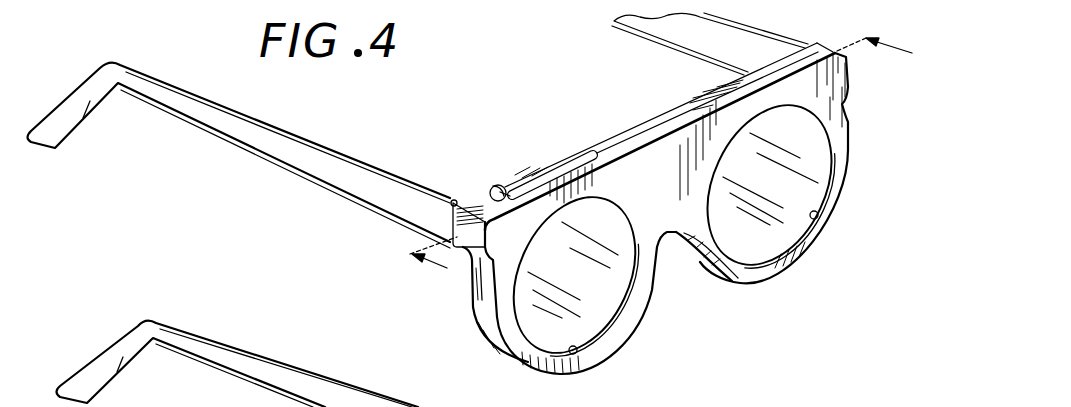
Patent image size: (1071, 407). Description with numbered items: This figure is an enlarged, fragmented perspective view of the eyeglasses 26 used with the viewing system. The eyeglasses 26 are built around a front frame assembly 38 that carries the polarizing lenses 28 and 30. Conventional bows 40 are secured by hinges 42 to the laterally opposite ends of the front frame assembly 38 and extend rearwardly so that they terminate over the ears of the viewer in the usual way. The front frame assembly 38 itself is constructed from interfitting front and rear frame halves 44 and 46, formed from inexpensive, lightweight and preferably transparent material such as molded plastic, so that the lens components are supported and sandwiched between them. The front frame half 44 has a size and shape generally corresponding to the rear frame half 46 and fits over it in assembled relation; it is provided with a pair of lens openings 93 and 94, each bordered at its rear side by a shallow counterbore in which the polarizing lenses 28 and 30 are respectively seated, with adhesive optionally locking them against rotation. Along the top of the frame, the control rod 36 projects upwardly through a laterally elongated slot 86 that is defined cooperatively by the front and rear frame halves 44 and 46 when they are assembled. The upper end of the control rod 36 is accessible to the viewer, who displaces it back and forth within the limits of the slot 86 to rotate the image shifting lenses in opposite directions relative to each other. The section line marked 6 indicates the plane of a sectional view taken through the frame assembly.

The eyeglasses 26 is at (558, 206).
The polarizing lens 28 is at (595, 313).
The polarizing lens 30 is at (770, 248).
The control rod 36 is at (495, 186).
The front frame assembly 38 is at (660, 117).
The bows 40 is at (356, 160).
The hinges 42 is at (454, 200).
The front frame half 44 is at (757, 83).
The rear frame half 46 is at (662, 115).
The slot 86 is at (533, 185).
The lens opening 93 is at (576, 353).
The lens opening 94 is at (818, 216).
The section line 6- 6 is at (671, 172).